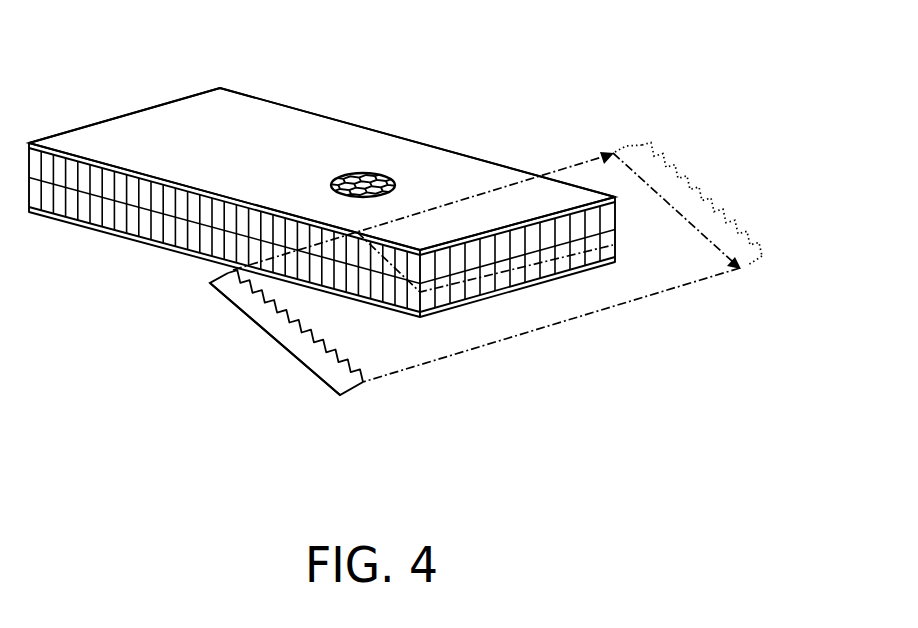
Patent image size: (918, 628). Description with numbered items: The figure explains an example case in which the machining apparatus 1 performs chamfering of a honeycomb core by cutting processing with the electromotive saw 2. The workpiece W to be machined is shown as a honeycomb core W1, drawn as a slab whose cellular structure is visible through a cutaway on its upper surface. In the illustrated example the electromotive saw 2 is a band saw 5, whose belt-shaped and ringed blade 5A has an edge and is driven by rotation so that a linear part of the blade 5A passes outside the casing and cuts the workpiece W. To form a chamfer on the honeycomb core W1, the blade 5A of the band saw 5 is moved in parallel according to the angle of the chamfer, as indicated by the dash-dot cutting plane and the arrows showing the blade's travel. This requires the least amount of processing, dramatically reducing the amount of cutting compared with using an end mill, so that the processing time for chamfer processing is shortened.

The machining apparatus 1 is at (713, 90).
The workpiece W is at (273, 97).
The honeycomb core W1 is at (363, 127).
The electromotive saw 2 is at (222, 304).
The band saw 5 is at (254, 332).
The blade 5A is at (295, 358).